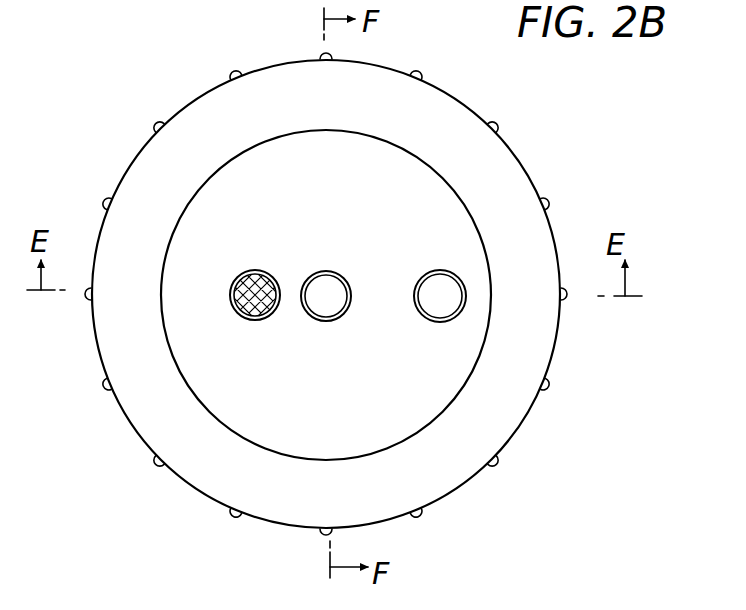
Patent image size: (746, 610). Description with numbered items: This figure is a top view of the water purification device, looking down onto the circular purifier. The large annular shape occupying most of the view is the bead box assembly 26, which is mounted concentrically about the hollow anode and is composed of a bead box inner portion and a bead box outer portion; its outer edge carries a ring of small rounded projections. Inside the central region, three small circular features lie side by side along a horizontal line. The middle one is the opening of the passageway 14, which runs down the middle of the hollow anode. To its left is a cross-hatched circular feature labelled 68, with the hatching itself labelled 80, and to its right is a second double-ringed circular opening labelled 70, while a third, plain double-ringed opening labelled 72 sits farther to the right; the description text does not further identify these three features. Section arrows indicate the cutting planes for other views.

The bead box assembly 26 is at (215, 187).
The screened opening 68 is at (255, 308).
The screen 80 is at (257, 321).
The aperture 70 is at (326, 275).
The passageway 14 is at (336, 308).
The aperture 72 is at (442, 270).